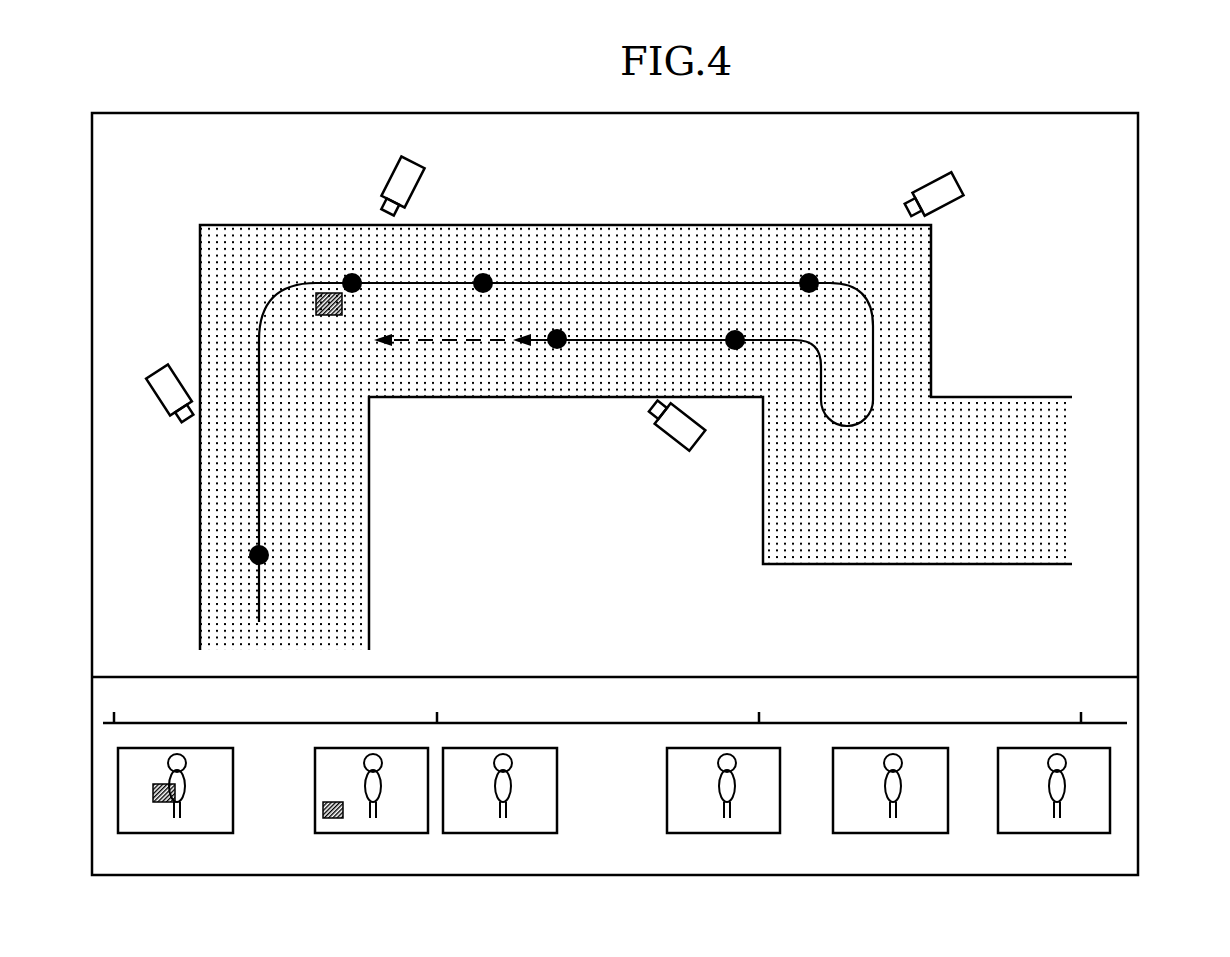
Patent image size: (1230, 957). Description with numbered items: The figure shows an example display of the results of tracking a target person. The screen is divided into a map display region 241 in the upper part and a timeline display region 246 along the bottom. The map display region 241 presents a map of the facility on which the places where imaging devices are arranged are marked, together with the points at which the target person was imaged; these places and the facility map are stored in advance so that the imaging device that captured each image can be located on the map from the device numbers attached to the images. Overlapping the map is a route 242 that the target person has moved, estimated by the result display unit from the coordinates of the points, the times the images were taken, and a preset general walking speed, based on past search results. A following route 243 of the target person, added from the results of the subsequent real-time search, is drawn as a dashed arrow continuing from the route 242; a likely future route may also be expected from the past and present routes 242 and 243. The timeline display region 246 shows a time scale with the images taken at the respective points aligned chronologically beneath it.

The map display region 241 is at (1138, 195).
The route 242 is at (873, 338).
The following route 243 is at (462, 342).
The timeline display region 246 is at (1139, 760).